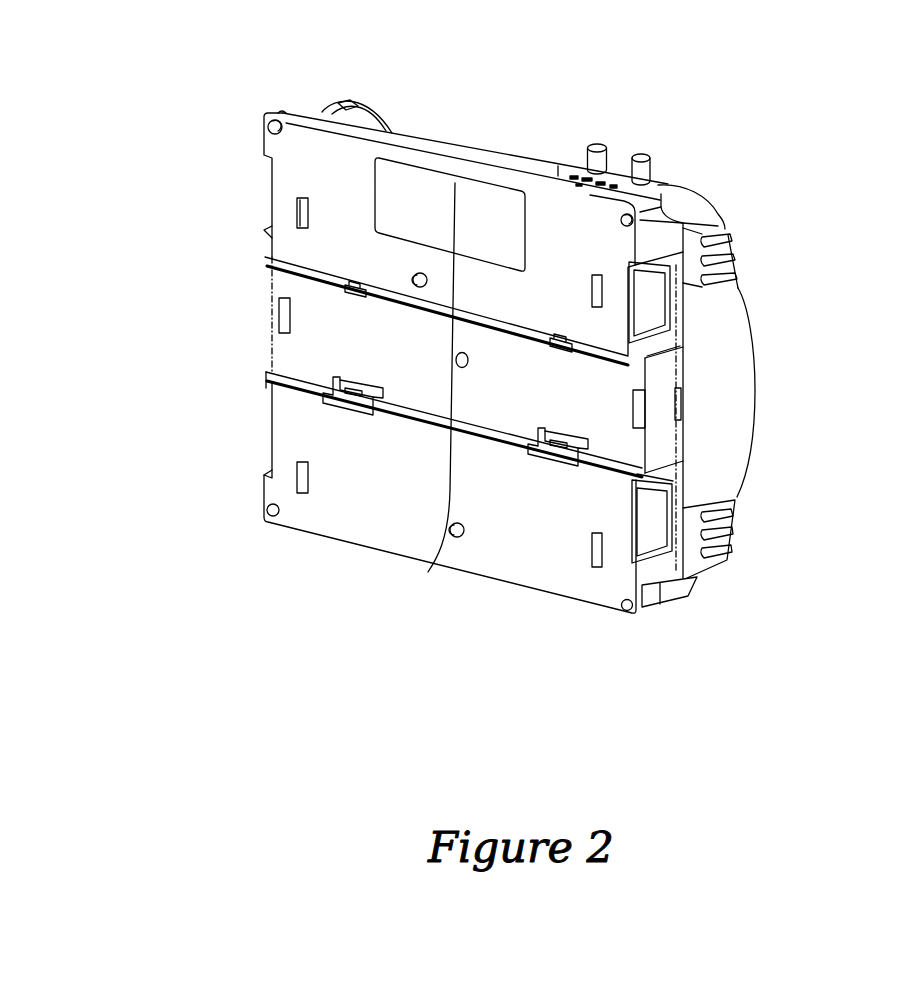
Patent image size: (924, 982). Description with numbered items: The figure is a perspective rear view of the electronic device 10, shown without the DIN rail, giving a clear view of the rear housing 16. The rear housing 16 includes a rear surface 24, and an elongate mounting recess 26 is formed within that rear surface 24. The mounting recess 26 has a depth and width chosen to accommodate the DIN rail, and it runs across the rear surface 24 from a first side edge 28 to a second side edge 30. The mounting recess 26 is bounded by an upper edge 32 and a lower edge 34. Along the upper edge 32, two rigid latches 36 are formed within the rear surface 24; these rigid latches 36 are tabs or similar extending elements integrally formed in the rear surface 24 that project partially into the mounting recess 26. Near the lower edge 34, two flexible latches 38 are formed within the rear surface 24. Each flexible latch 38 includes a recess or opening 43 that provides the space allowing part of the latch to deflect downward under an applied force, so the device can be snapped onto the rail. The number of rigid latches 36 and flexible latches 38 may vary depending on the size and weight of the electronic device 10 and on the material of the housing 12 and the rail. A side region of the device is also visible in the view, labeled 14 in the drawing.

The electronic device 10 is at (247, 70).
The housing 12 is at (682, 133).
The side housing bulge 14 is at (735, 360).
The rear housing 16 is at (660, 568).
The rear surface 24 is at (358, 512).
The mounting recess 26 is at (302, 354).
The first side edge 28 is at (268, 383).
The second side edge 30 is at (720, 224).
The upper edge 32 is at (455, 183).
The lower edge 34 is at (428, 572).
The rigid latch 36 is at (559, 343).
The flexible latch 38 is at (346, 403).
The opening 43 is at (355, 404).